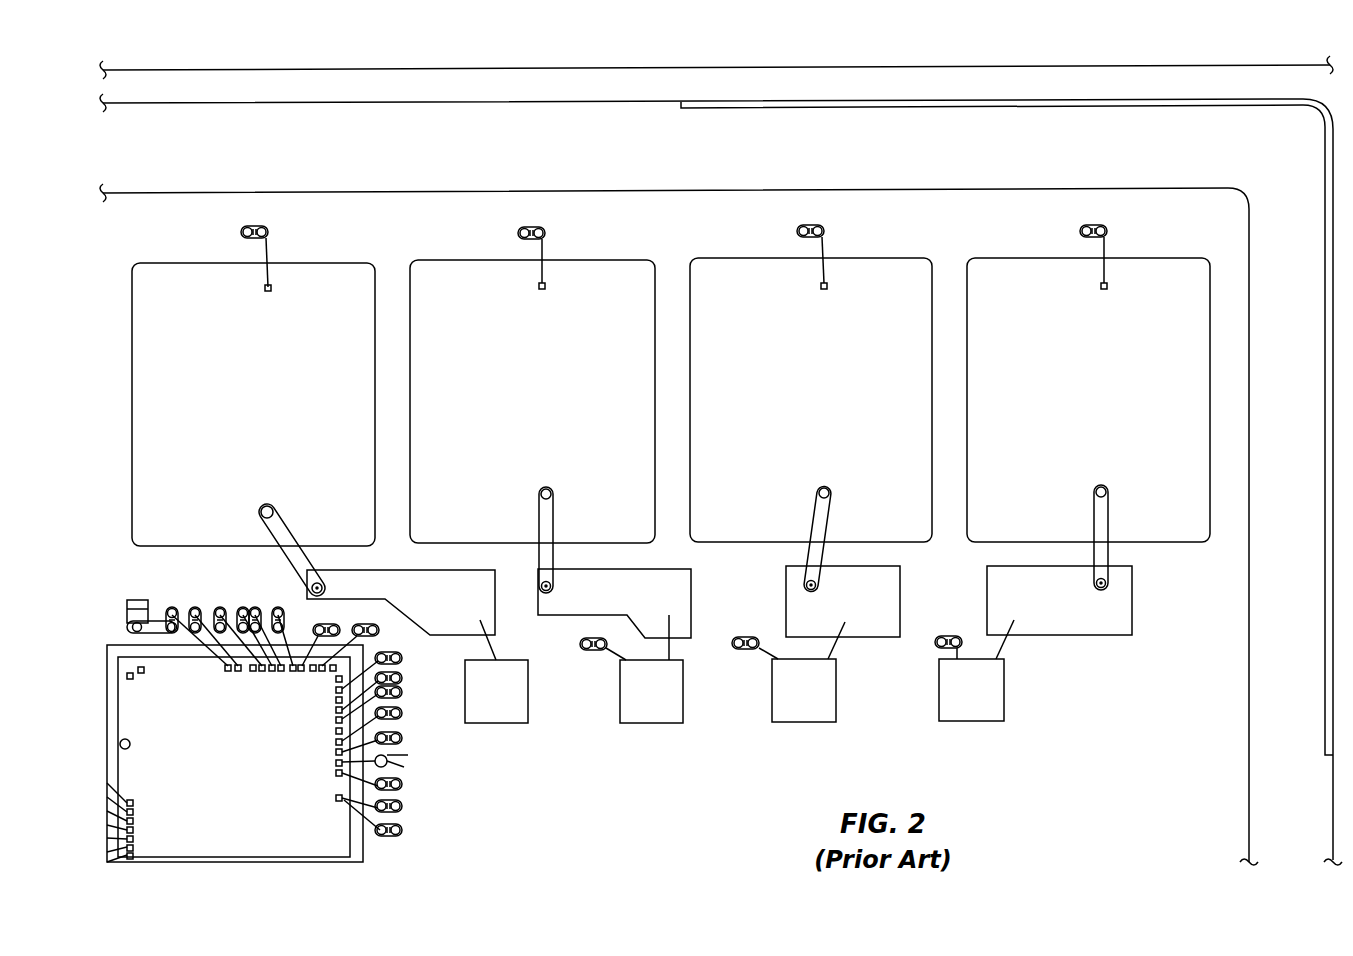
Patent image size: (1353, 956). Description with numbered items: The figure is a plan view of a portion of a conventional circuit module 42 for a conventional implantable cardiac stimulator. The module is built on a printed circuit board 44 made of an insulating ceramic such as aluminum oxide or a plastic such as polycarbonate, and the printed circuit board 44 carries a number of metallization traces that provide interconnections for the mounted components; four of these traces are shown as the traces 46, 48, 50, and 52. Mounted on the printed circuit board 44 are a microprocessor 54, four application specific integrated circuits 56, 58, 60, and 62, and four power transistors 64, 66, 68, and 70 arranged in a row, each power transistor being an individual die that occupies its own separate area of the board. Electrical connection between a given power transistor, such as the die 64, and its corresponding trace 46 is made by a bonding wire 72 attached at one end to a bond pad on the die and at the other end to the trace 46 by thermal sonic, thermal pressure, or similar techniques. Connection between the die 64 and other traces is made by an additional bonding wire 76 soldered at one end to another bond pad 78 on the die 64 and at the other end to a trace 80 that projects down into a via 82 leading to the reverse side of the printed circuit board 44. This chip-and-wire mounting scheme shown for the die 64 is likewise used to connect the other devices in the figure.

The circuit module 42 is at (690, 145).
The printed circuit board 44 is at (883, 188).
The metallization trace 46 is at (426, 613).
The metallization trace 48 is at (598, 613).
The metallization trace 50 is at (829, 611).
The metallization trace 52 is at (1046, 610).
The microprocessor 54 is at (223, 765).
The application specific integrated circuit 56 is at (483, 705).
The application specific integrated circuit 58 is at (637, 705).
The application specific integrated circuit 60 is at (790, 704).
The application specific integrated circuit 62 is at (957, 704).
The power transistor 64 is at (239, 418).
The power transistor 66 is at (518, 414).
The power transistor 68 is at (796, 414).
The power transistor 70 is at (1076, 412).
The bonding wire 72 is at (280, 559).
The bonding wire 76 is at (272, 251).
The bond pad 78 is at (272, 287).
The trace 80 is at (278, 233).
The via 82 is at (248, 228).